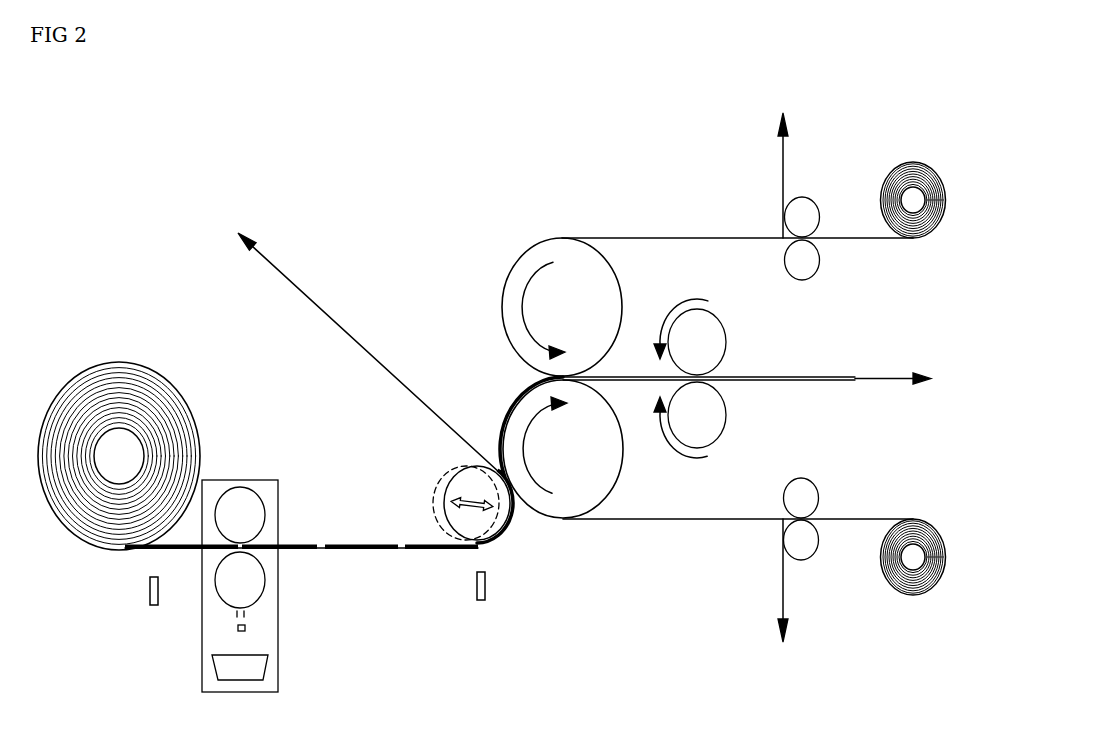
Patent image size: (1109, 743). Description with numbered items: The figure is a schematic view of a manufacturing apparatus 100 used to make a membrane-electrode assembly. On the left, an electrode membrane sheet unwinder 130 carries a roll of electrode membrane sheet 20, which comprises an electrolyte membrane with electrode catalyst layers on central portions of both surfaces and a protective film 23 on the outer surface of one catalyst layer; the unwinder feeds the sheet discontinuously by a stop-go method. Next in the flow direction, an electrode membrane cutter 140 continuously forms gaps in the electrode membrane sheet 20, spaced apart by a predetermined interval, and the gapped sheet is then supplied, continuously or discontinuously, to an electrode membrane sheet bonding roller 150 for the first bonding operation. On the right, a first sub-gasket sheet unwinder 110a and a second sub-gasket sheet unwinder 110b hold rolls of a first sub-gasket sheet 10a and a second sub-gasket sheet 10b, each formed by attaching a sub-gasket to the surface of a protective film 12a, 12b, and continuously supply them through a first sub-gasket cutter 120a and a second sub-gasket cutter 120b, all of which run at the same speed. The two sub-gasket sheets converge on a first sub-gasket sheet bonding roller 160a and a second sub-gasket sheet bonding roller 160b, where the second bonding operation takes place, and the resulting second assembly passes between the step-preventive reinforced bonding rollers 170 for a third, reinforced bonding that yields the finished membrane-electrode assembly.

The manufacturing apparatus 100 is at (145, 180).
The electrode membrane sheet unwinder 130 is at (132, 362).
The electrode membrane cutter 140 is at (278, 666).
The electrode membrane sheet 20 is at (413, 550).
The electrode membrane sheet bonding roller 150 is at (500, 523).
The protective film 23 is at (369, 353).
The first sub-gasket sheet bonding roller 160a is at (582, 498).
The second sub-gasket sheet bonding roller 160b is at (528, 267).
The step-preventive reinforced bonding rollers 170 is at (718, 412).
The first sub-gasket sheet 10a is at (714, 522).
The second sub-gasket sheet 10b is at (714, 236).
The protective film 12a is at (783, 605).
The protective film 12b is at (783, 155).
The first sub-gasket sheet unwinder 110a is at (913, 598).
The second sub-gasket sheet unwinder 110b is at (911, 163).
The first sub-gasket cutter 120a is at (812, 490).
The second sub-gasket cutter 120b is at (810, 262).